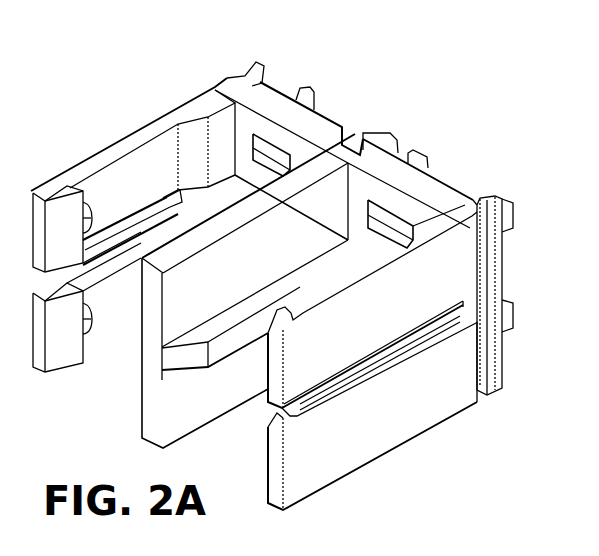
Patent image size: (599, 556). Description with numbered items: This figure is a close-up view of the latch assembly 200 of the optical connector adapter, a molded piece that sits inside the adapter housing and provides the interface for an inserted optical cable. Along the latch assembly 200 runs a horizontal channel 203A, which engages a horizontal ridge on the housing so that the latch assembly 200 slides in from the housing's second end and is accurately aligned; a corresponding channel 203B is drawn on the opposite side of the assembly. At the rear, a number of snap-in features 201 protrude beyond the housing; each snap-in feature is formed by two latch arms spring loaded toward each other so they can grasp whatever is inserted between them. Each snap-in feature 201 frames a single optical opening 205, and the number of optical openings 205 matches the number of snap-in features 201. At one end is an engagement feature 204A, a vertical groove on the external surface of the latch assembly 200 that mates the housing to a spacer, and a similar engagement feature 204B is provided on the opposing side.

The latch assembly 200 is at (252, 263).
The snap-in features 201 is at (313, 87).
The horizontal channel 203A is at (129, 228).
The second guide rail 203B is at (340, 383).
The engagement feature 204A is at (490, 352).
The engagement feature 204B is at (240, 80).
The optical openings 205 is at (291, 165).